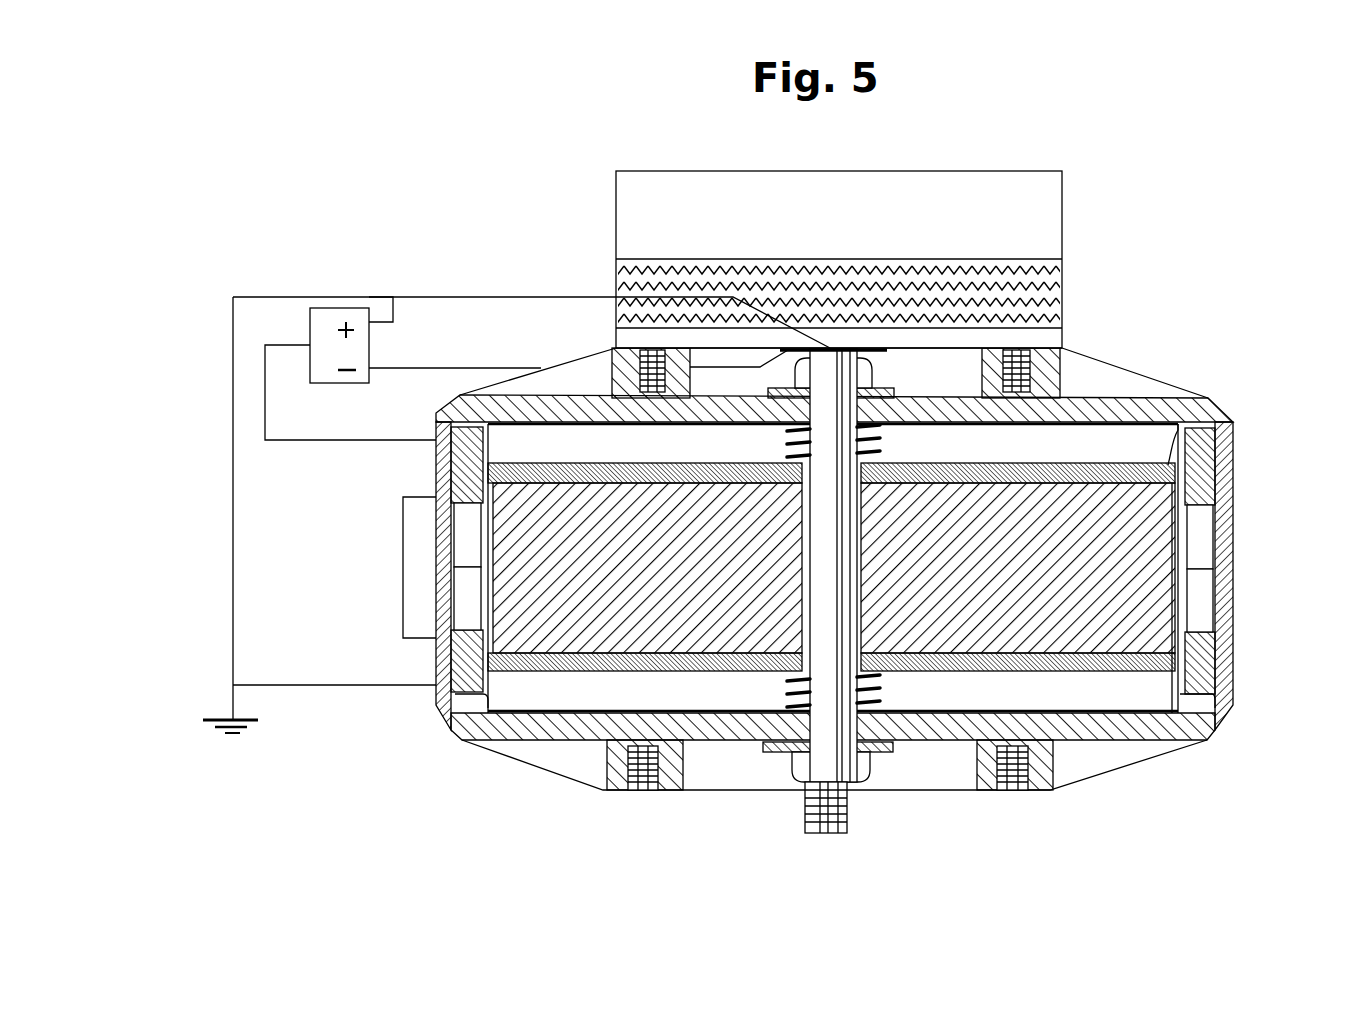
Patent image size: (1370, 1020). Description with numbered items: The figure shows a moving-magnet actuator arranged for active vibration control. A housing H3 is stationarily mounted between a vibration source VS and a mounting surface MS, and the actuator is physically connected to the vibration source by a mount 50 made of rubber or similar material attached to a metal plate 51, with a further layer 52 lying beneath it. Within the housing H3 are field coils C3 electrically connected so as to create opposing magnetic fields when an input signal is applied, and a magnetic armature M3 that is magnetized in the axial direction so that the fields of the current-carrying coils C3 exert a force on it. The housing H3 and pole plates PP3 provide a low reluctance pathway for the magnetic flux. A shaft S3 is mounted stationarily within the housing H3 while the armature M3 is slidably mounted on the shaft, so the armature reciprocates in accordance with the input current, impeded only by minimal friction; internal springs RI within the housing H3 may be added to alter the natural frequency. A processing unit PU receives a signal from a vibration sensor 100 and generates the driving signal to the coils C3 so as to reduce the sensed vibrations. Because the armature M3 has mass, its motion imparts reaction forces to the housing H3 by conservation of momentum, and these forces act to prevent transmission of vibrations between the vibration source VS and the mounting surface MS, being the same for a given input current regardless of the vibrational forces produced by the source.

The vibration source VS is at (632, 185).
The mount 50 is at (618, 268).
The metal plate 51 is at (870, 350).
The base layer 52 is at (1040, 337).
The vibration sensor 100 is at (835, 348).
The processing unit PU is at (356, 308).
The internal springs RI is at (1032, 447).
The pole plates PP3 is at (1173, 425).
The magnetic armature M3 is at (1232, 480).
The field coils C3 is at (1230, 637).
The housing H3 is at (879, 569).
The shaft S3 is at (822, 728).
The mounting surface MS is at (1047, 793).